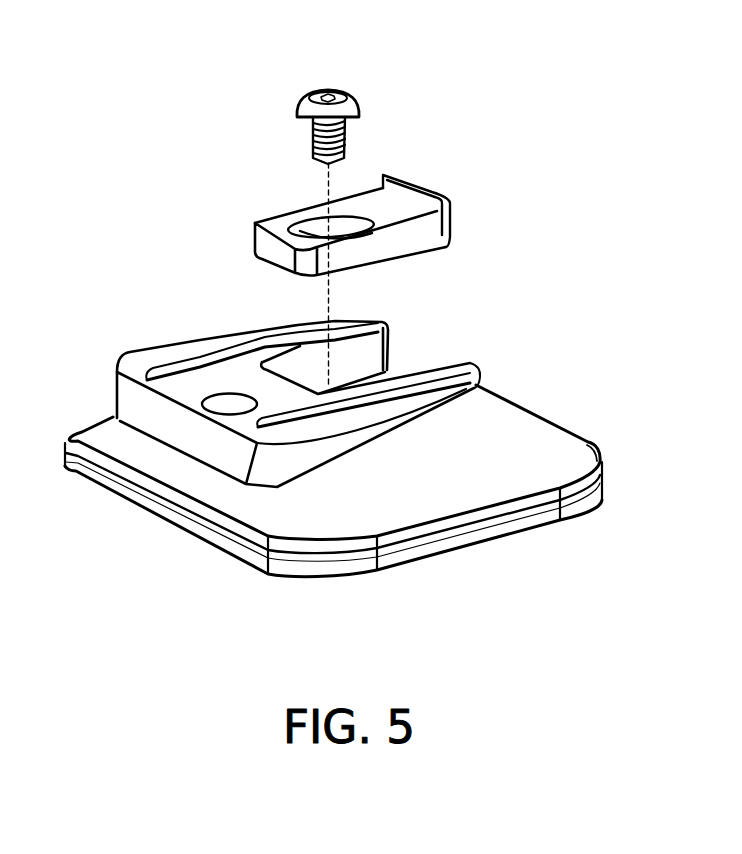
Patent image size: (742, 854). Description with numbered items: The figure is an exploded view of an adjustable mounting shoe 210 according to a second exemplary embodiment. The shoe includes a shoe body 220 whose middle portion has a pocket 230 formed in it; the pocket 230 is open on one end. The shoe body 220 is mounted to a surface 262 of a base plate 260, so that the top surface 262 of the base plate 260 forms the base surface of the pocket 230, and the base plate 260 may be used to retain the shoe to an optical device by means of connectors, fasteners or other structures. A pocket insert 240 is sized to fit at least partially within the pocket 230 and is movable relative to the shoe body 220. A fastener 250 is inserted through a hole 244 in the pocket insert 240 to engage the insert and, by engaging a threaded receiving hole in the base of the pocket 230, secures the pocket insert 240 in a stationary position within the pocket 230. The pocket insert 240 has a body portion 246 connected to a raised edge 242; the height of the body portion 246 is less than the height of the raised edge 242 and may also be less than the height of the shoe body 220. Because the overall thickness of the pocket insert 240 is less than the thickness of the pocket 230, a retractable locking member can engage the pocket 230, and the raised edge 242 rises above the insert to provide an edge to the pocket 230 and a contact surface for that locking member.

The adjustable mounting shoe 210 is at (136, 160).
The shoe body 220 is at (152, 354).
The pocket 230 is at (400, 330).
The pocket insert 240 is at (416, 237).
The raised edge 242 is at (438, 183).
The hole 244 is at (303, 220).
The body portion 246 is at (358, 202).
The fastener 250 is at (346, 98).
The base plate 260 is at (597, 492).
The surface 262 is at (527, 437).